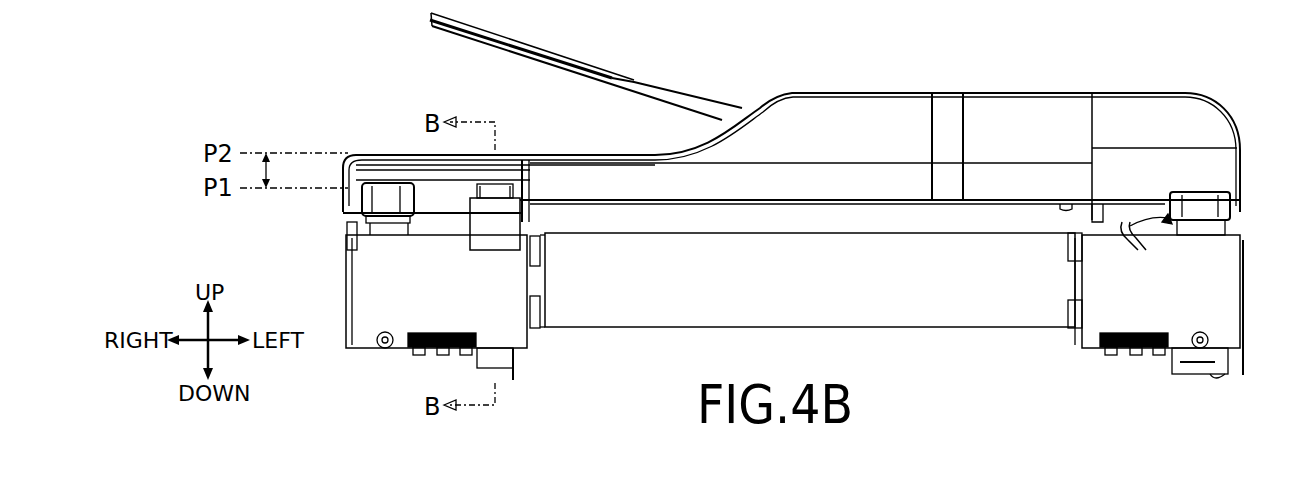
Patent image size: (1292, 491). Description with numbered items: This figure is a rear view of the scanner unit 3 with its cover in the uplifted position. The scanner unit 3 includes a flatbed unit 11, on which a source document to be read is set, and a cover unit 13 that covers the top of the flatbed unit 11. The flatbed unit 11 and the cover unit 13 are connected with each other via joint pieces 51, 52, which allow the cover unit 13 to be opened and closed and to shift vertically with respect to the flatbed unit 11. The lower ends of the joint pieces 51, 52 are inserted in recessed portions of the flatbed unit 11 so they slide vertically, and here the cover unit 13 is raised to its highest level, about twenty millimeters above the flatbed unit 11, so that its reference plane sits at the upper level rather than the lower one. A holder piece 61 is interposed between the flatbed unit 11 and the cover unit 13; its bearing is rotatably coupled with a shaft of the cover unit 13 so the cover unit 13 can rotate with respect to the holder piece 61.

The scanner unit 3 is at (340, 121).
The cover unit 13 is at (1230, 109).
The flatbed unit 11 is at (1244, 307).
The joint piece 51 is at (362, 226).
The joint piece 52 is at (1228, 222).
The holder piece 61 is at (496, 208).